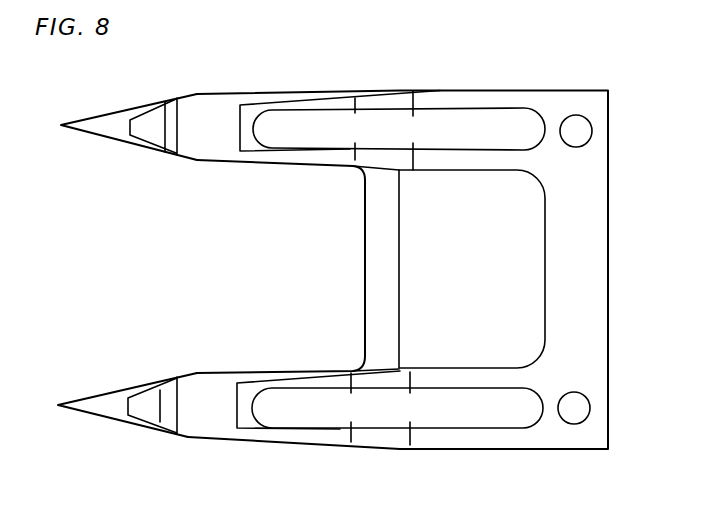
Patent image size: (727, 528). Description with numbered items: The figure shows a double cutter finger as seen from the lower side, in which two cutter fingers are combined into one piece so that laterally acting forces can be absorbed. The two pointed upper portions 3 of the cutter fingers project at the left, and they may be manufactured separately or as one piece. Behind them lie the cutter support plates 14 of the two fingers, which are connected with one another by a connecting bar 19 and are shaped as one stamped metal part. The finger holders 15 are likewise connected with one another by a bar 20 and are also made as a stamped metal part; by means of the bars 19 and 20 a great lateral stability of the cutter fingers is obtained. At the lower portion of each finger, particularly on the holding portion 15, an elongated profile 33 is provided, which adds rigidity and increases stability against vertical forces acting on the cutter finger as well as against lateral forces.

The upper portion 3 is at (122, 130).
The cutter support plate 14 is at (226, 100).
The finger holder 15 is at (455, 160).
The connecting bar 19 is at (373, 228).
The bar 20 is at (562, 253).
The profile 33 is at (435, 130).